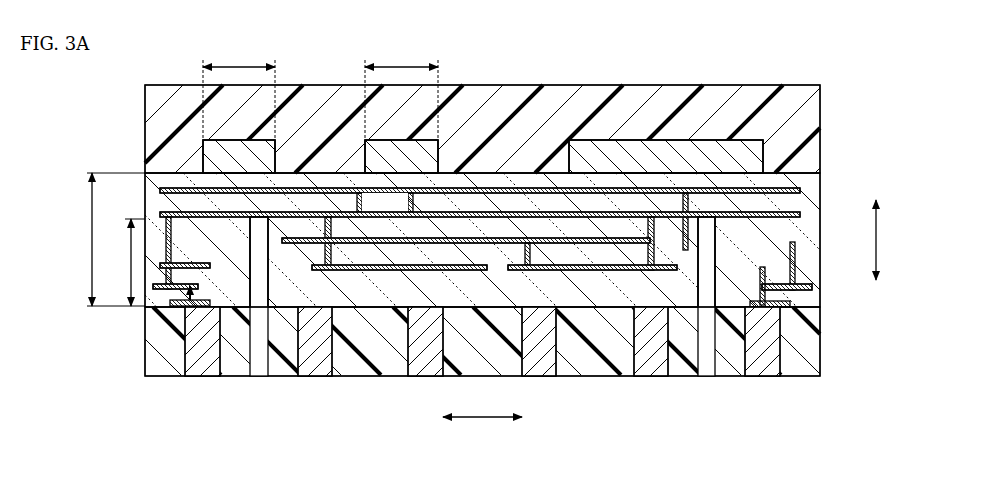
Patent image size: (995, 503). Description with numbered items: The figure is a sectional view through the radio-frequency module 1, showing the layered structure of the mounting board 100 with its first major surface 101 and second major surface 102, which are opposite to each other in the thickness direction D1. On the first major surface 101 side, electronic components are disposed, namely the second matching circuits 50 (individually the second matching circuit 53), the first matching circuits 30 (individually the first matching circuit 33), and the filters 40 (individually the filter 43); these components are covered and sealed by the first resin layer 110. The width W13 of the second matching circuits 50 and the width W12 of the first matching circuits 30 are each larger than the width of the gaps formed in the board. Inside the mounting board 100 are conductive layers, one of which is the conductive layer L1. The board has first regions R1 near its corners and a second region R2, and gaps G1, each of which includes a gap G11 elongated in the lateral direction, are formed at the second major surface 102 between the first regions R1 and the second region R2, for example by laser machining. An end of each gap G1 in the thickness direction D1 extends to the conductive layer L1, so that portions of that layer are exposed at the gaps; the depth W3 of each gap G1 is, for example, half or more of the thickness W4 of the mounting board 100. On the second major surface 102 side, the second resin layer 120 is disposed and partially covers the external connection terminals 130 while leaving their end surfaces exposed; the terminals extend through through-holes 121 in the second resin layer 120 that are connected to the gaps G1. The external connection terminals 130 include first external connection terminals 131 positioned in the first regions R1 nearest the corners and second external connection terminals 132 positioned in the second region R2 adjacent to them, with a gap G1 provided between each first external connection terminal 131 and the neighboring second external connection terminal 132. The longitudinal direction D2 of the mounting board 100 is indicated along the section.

The radio-frequency module 1 is at (813, 63).
The first resin layer 110 is at (808, 102).
The first major surface 101 is at (798, 168).
The mounting board 100 is at (808, 205).
The second major surface 102 is at (801, 307).
The second resin layer 120 is at (805, 360).
The second matching circuits 50 is at (219, 147).
The second matching circuit 53 is at (213, 143).
The first matching circuits 30 is at (425, 152).
The first matching circuit 33 is at (430, 153).
The filters 40 is at (663, 150).
The filter 43 is at (666, 156).
The external connection terminals 130 is at (484, 373).
The first external connection terminals 131 is at (484, 373).
The second external connection terminals 132 is at (484, 373).
The through-holes 121 is at (258, 348).
The conductive layer L1 is at (213, 219).
The gaps G1 is at (260, 272).
The gap G11 is at (482, 262).
The first regions R1 is at (152, 304).
The second region R2 is at (506, 293).
The thickness direction D1 is at (861, 240).
The longitudinal direction D2 is at (482, 404).
The depth of gap W3 is at (122, 262).
The thickness of mounting board W4 is at (103, 239).
The width of first matching circuits W12 is at (401, 89).
The width of second matching circuits W13 is at (239, 89).